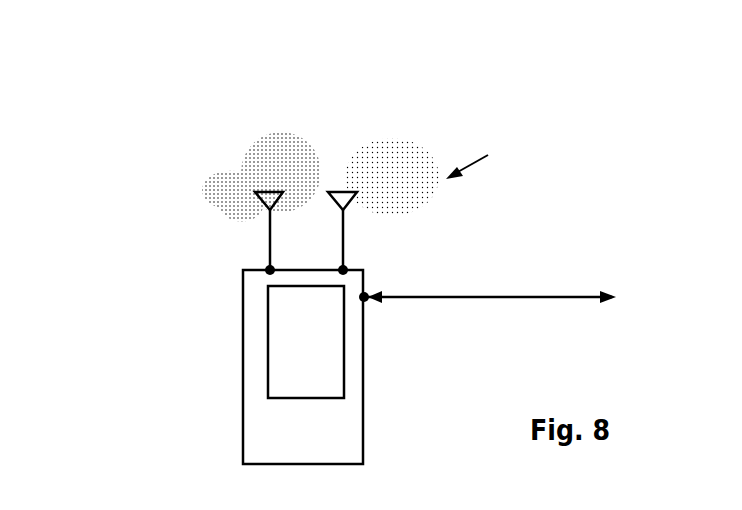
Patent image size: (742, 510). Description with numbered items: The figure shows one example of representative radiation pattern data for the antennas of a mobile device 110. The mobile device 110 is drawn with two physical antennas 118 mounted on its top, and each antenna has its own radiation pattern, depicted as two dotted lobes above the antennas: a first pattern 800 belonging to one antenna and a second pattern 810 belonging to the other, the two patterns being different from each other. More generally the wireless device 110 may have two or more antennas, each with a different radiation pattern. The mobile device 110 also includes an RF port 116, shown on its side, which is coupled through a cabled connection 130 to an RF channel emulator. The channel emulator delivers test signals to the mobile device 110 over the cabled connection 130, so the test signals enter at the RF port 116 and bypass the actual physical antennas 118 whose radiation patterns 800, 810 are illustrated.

The radiation pattern 800 is at (215, 116).
The radiation pattern 810 is at (395, 99).
The antennas 118 is at (254, 240).
The mobile device 110 is at (243, 365).
The RF port 116 is at (368, 301).
The cabled connection 130 is at (486, 297).